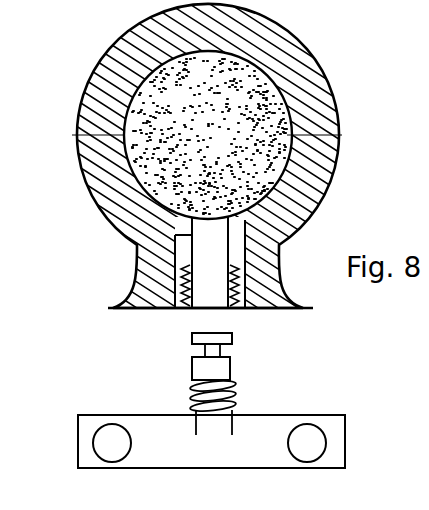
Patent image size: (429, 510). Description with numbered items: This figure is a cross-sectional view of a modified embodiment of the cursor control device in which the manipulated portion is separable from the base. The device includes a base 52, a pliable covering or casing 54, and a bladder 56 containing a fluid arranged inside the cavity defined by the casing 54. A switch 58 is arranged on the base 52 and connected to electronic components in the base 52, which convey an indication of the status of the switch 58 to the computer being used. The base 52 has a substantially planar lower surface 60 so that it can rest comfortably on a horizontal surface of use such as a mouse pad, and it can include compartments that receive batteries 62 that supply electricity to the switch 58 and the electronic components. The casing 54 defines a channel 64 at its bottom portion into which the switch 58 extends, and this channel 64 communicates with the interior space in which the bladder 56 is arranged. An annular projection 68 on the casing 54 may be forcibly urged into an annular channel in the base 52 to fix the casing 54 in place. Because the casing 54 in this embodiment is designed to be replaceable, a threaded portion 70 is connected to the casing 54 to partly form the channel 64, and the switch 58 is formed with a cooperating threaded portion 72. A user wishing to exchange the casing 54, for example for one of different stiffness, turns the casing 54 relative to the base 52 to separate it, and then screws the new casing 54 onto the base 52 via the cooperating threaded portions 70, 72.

The base 52 is at (346, 428).
The casing 54 is at (146, 260).
The bladder 56 is at (150, 160).
The switch 58 is at (239, 363).
The lower surface 60 is at (63, 12).
The batteries 62 is at (308, 438).
The channel 64 is at (218, 269).
The annular projection 68 is at (294, 8).
The threaded portion 70 is at (182, 322).
The threaded portion 72 is at (190, 387).